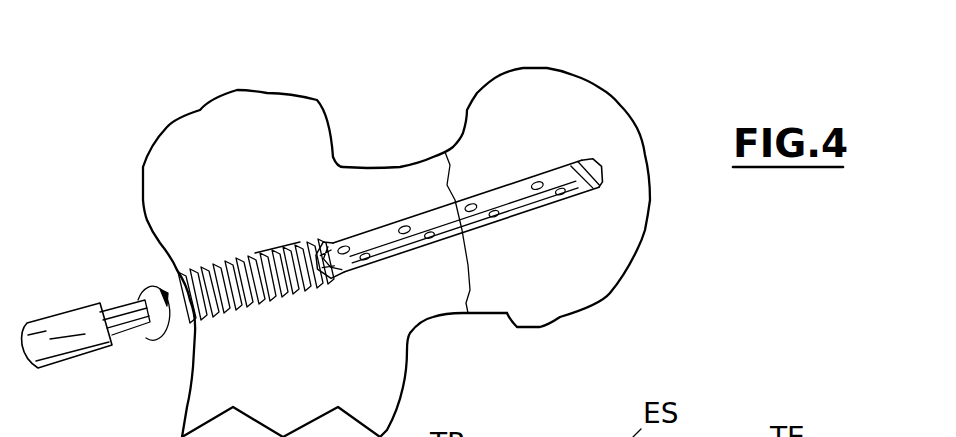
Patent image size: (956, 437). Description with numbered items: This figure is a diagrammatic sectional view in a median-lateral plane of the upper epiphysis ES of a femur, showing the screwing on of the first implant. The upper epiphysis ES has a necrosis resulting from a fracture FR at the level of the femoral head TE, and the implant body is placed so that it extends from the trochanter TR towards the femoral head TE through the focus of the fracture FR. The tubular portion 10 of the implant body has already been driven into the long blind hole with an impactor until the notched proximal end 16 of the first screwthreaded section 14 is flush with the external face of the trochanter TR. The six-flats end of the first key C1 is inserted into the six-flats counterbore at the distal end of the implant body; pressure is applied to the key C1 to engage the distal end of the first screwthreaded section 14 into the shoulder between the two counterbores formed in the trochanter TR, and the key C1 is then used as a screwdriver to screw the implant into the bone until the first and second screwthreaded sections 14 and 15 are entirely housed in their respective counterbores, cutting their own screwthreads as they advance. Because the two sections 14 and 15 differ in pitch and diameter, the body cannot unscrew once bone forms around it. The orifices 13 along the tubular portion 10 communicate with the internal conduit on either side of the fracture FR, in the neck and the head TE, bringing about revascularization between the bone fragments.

The tubular portion 10 is at (502, 203).
The orifices 13 is at (567, 190).
The first screwthreaded section 14 is at (266, 257).
The second screwthreaded section 15 is at (198, 310).
The notched proximal end 16 is at (320, 253).
The first key C1 is at (71, 338).
The trochanter TR is at (165, 157).
The upper epiphysis ES is at (368, 101).
The fracture FR is at (468, 313).
The femoral head TE is at (601, 272).